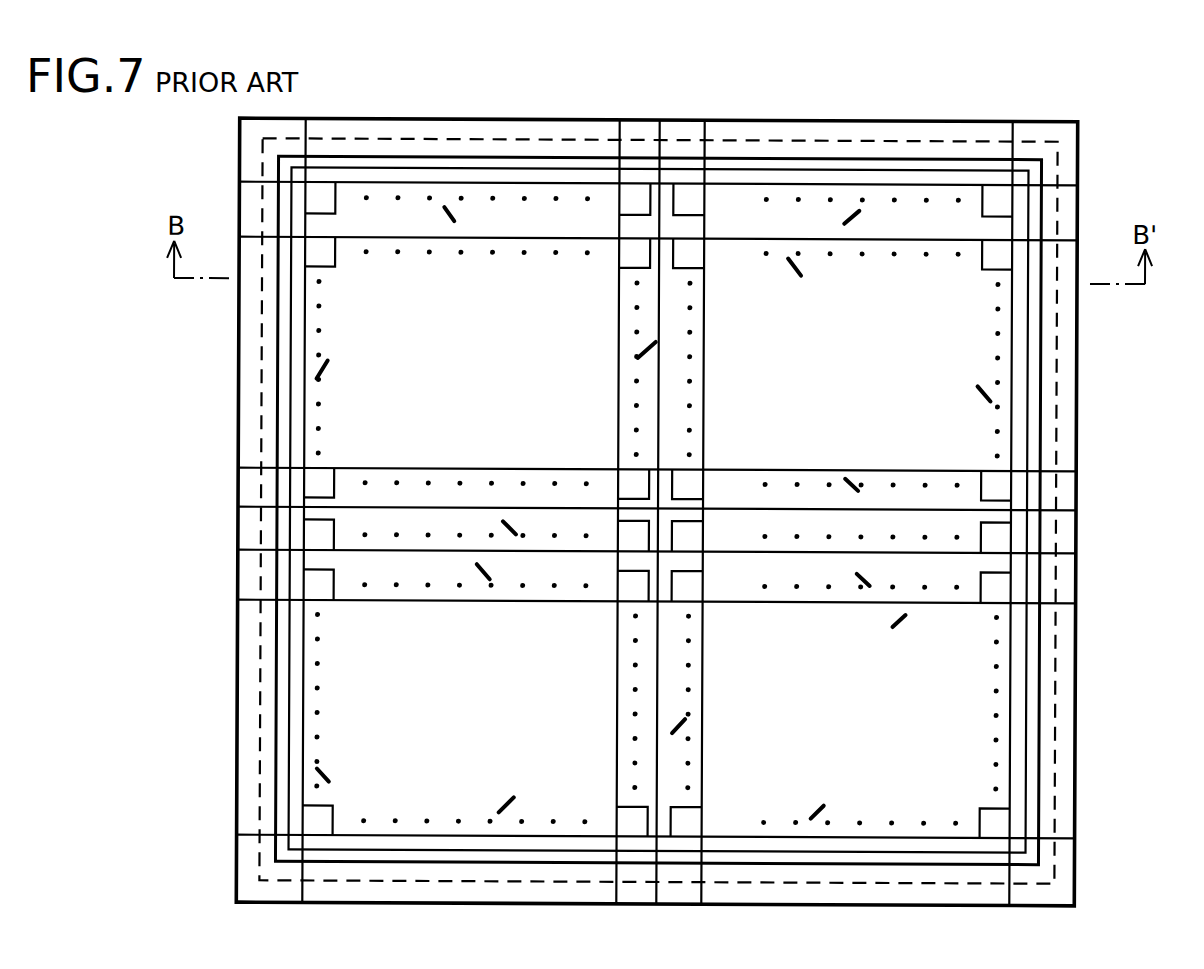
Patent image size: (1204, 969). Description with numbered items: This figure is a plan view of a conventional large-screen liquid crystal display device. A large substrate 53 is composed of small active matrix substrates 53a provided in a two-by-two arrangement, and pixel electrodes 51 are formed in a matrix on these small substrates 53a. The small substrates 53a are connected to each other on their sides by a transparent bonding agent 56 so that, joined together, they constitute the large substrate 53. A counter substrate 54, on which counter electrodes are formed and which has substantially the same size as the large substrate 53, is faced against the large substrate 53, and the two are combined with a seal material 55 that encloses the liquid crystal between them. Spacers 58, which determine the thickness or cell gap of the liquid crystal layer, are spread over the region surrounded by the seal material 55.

The pixel electrode 51 is at (638, 199).
The large substrate 53 is at (832, 119).
The small substrate 53a is at (248, 128).
The counter substrate 54 is at (984, 139).
The seal material 55 is at (1030, 330).
The transparent bonding agent 56 is at (660, 890).
The spacer 58 is at (448, 212).